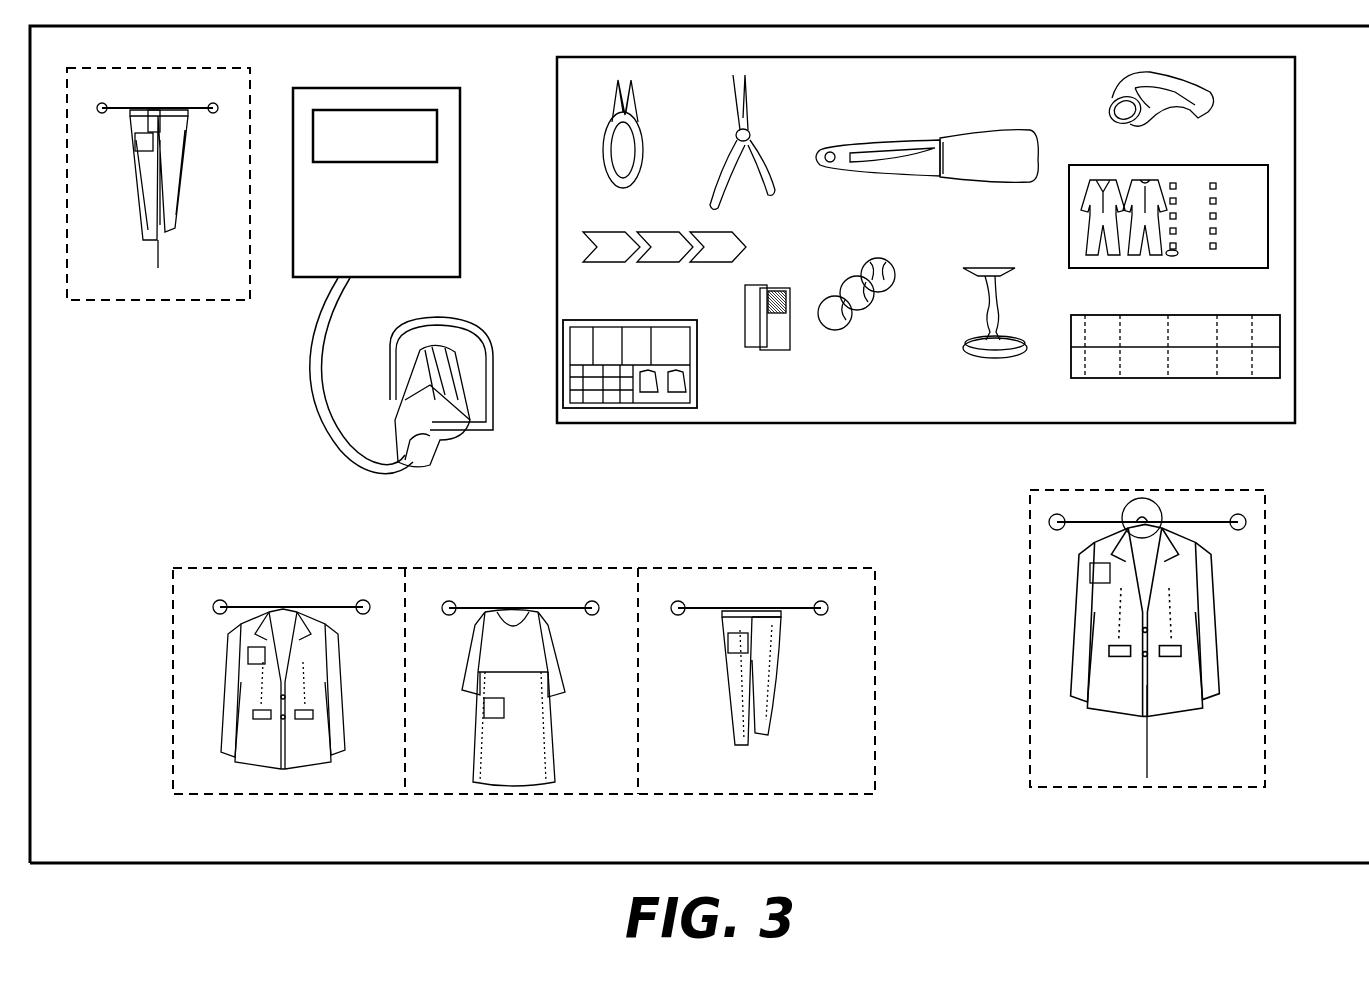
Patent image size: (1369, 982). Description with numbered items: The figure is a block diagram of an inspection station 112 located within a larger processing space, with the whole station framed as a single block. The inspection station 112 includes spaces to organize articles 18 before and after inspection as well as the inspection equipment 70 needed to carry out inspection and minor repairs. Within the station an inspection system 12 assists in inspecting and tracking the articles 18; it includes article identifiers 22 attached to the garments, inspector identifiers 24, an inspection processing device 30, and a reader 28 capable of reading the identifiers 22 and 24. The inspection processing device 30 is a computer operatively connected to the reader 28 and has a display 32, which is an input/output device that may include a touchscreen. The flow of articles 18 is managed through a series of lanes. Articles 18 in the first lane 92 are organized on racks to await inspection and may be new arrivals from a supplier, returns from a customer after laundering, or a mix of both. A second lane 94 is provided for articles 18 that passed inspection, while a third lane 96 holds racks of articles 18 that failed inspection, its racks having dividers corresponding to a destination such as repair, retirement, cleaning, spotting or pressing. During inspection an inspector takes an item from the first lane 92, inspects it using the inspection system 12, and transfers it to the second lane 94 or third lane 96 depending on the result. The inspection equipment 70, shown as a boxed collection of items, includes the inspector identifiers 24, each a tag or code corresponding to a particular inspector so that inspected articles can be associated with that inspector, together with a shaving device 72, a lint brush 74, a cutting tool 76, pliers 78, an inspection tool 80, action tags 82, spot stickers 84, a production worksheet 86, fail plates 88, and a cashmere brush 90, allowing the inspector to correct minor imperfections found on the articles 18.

The inspection system 12 is at (222, 393).
The article 18 is at (143, 226).
The article identifier 22 is at (140, 152).
The inspector identifier 24 is at (148, 118).
The reader 28 is at (398, 400).
The inspection processing device 30 is at (415, 95).
The display 32 is at (430, 140).
The inspection equipment 70 is at (947, 424).
The shaving device 72 is at (1107, 100).
The lint brush 74 is at (990, 143).
The cutting tool 76 is at (640, 183).
The pliers 78 is at (728, 110).
The inspection tool 80 is at (598, 318).
The action tags 82 is at (1235, 170).
The spot stickers 84 is at (620, 263).
The production worksheet 86 is at (1185, 372).
The fail plates 88 is at (890, 300).
The cashmere brush 90 is at (972, 352).
The first lane 92 is at (545, 567).
The second lane 94 is at (128, 300).
The third lane 96 is at (1030, 713).
The inspection station 112 is at (412, 865).